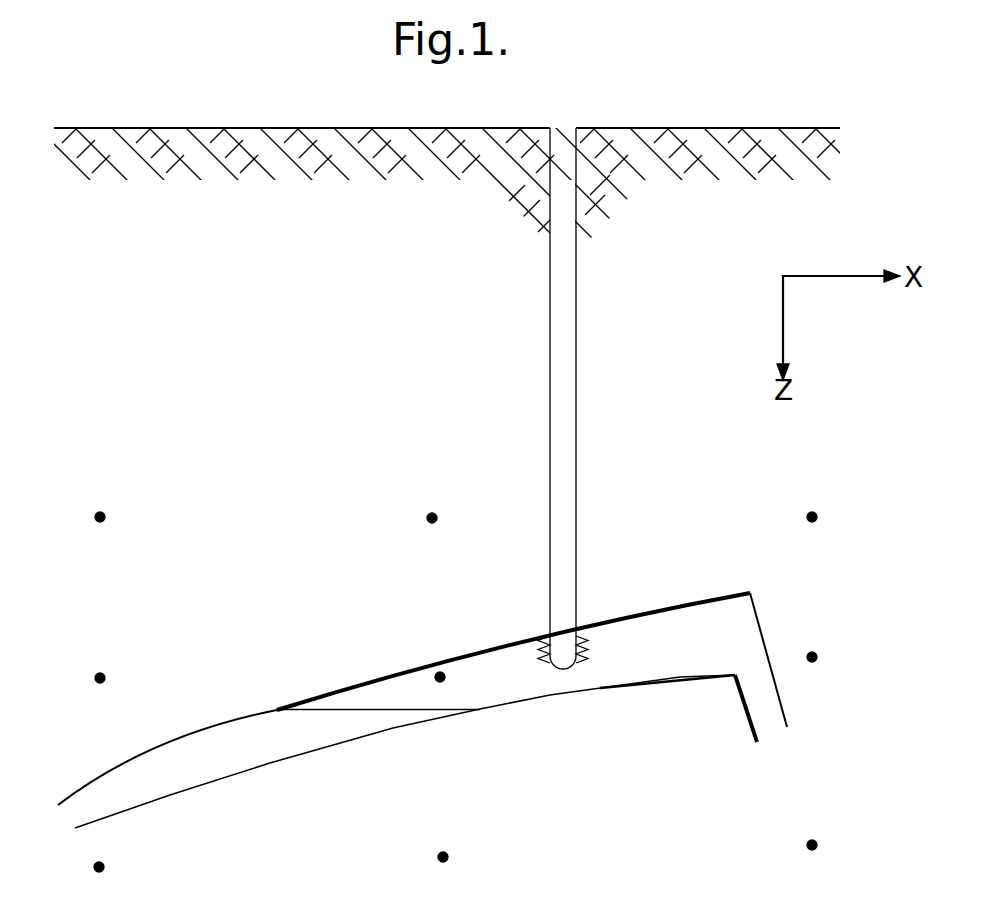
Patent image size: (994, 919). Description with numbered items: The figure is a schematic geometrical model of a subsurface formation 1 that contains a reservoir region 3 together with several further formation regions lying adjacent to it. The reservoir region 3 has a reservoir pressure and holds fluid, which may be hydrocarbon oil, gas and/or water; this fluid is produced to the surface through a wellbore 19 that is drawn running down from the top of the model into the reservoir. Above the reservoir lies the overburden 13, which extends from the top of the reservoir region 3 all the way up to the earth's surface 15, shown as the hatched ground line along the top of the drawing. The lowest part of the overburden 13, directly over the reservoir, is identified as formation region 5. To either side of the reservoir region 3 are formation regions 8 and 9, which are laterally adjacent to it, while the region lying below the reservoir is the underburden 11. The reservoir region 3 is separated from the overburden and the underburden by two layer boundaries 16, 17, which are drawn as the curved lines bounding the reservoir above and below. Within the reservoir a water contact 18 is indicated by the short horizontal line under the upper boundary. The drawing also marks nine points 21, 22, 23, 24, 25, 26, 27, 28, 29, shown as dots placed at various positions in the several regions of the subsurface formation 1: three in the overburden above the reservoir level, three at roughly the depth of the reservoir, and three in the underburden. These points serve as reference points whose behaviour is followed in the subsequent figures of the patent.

The subsurface formation 1 is at (263, 518).
The reservoir region 3 is at (645, 674).
The formation region 5 is at (413, 638).
The formation region 8 is at (39, 727).
The formation region 9 is at (870, 750).
The underburden 11 is at (526, 767).
The overburden 13 is at (404, 370).
The earth's surface 15 is at (356, 128).
The layer boundary 16 is at (233, 723).
The layer boundary 17 is at (278, 766).
The water contact 18 is at (340, 708).
The wellbore 19 is at (577, 290).
The point 21 is at (100, 517).
The point 22 is at (437, 518).
The point 23 is at (817, 517).
The point 24 is at (105, 678).
The point 25 is at (445, 677).
The point 26 is at (817, 657).
The point 27 is at (104, 866).
The point 28 is at (448, 856).
The point 29 is at (817, 845).